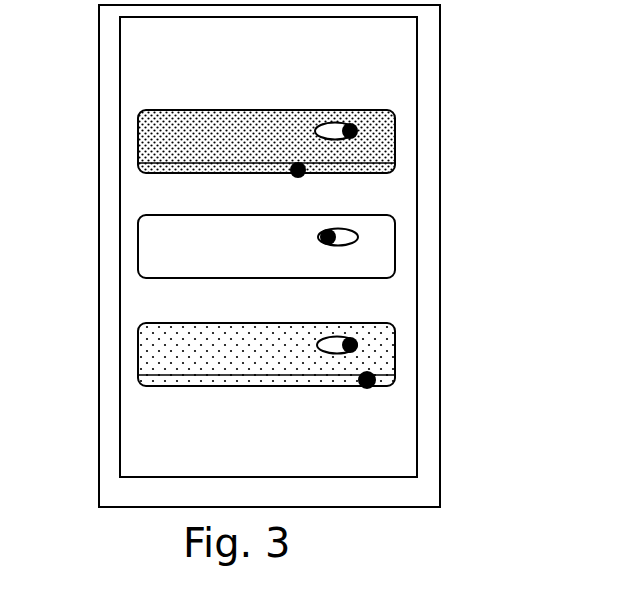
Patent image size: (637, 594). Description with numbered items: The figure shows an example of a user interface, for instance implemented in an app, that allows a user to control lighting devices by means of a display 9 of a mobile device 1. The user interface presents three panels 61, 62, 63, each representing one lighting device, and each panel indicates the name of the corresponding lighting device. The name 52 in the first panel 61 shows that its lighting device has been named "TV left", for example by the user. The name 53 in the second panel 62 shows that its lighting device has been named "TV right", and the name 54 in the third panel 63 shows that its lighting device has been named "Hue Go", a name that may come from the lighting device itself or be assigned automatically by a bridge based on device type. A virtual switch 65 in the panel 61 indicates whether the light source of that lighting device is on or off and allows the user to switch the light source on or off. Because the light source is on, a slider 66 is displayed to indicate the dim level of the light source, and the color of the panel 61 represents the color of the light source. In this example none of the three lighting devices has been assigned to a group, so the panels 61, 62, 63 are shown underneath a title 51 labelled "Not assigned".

The mobile device 1 is at (440, 437).
The display 9 is at (417, 475).
The title 51 is at (132, 58).
The name 52 is at (226, 116).
The name 53 is at (230, 230).
The name 54 is at (232, 336).
The panel 61 is at (395, 133).
The panel 62 is at (395, 240).
The panel 63 is at (395, 350).
The virtual switch 65 is at (320, 133).
The slider 66 is at (298, 178).